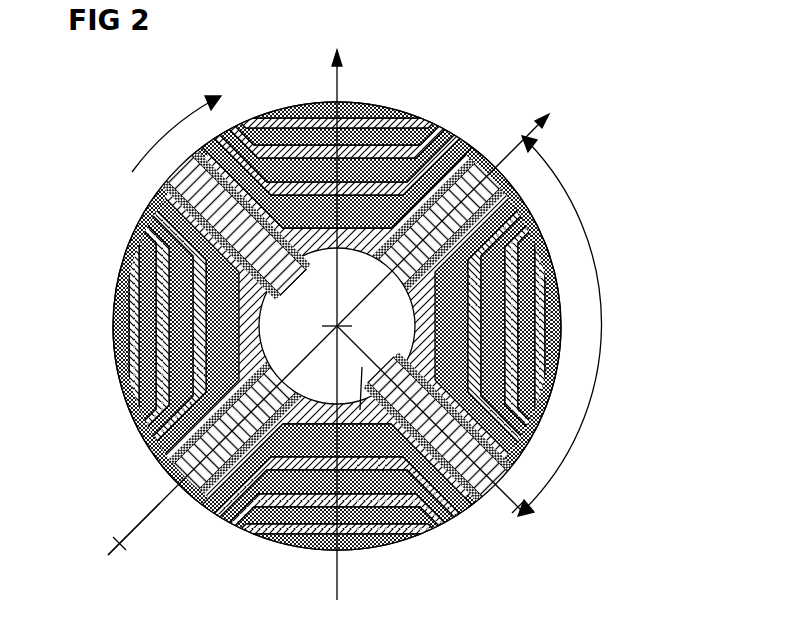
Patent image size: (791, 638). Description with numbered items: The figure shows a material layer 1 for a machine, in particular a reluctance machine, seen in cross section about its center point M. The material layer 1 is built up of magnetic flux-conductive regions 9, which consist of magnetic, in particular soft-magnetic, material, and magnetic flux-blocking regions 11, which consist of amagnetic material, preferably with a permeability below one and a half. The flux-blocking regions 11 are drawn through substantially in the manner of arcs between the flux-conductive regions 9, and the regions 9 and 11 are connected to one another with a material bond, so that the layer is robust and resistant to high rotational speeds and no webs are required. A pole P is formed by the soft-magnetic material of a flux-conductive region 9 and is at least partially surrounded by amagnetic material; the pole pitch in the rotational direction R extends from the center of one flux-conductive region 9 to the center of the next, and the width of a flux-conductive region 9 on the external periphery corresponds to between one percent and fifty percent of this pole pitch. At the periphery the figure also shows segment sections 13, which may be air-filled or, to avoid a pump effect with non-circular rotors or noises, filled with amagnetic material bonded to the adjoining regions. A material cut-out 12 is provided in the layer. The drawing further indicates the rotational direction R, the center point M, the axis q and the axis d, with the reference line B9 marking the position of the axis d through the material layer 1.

The material layer 1 is at (493, 67).
The magnetic flux-conductive regions 9 is at (462, 128).
The magnetic flux-blocking regions 11 is at (433, 112).
The material cut-out 12 is at (425, 540).
The segment sections 13 is at (341, 548).
The center point M is at (337, 326).
The axis q is at (334, 72).
The axis d is at (508, 153).
The reference line of d-axis B9 is at (133, 547).
The pole P is at (600, 328).
The rotational direction R is at (163, 128).